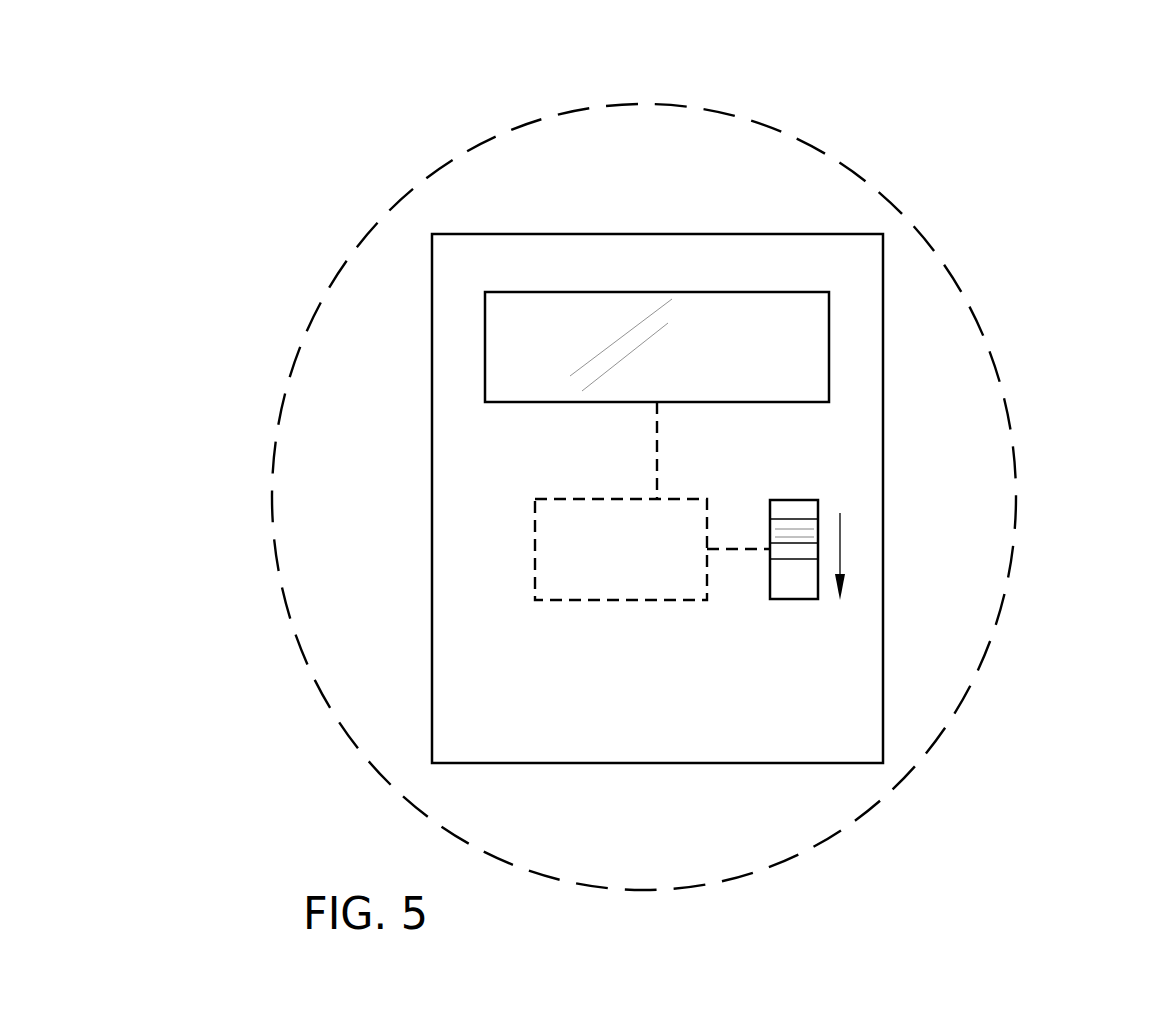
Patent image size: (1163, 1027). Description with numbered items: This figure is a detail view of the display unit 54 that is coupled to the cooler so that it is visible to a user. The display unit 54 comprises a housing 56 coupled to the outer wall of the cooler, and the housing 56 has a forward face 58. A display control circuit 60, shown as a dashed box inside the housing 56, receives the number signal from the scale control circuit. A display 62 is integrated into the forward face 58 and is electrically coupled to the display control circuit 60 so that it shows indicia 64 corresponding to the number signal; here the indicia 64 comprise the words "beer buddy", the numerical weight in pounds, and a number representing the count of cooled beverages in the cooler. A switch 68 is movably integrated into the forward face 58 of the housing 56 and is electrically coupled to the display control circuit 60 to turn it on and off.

The display unit 54 is at (735, 218).
The housing 56 is at (822, 234).
The forward face 58 is at (490, 457).
The display control circuit 60 is at (535, 598).
The display 62 is at (657, 292).
The indicia 64 is at (547, 312).
The switch 68 is at (805, 522).